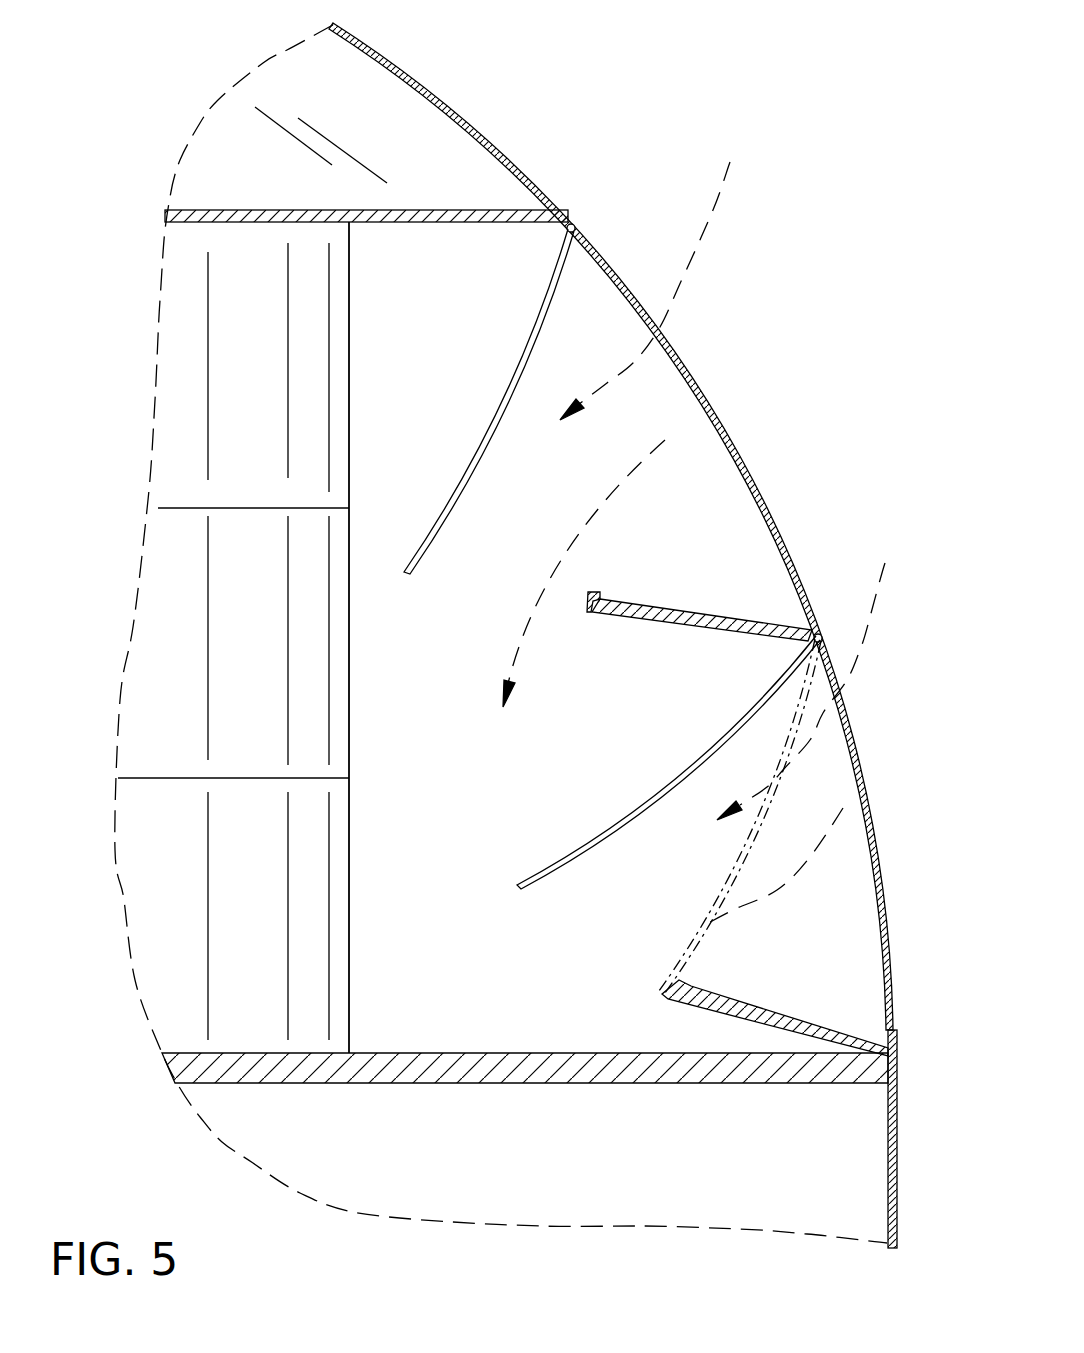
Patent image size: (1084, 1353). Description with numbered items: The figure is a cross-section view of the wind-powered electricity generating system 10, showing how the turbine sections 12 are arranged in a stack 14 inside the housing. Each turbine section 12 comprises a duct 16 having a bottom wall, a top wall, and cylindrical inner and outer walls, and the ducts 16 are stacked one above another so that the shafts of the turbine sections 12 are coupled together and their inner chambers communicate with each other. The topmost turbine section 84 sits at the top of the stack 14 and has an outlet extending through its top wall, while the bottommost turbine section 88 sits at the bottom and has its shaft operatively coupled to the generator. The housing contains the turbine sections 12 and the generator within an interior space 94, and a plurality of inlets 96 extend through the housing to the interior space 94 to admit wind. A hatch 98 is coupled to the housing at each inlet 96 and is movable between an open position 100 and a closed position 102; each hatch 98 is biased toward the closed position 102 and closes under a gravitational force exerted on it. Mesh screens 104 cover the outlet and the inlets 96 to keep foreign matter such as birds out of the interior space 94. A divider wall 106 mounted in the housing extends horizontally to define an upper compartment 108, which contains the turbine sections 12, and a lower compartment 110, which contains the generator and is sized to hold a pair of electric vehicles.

The wind-powered electricity generating system 10 is at (770, 105).
The turbine section 12 is at (207, 370).
The stack 14 is at (95, 380).
The duct 16 is at (245, 258).
The topmost turbine section 84 is at (205, 291).
The bottommost turbine section 88 is at (190, 1012).
The interior space 94 is at (492, 292).
The inlet 96 is at (608, 442).
The hatch 98 is at (460, 470).
The open position 100 is at (425, 583).
The closed position 102 is at (720, 960).
The mesh screen 104 is at (765, 500).
The divider wall 106 is at (791, 1068).
The upper compartment 108 is at (413, 1012).
The lower compartment 110 is at (567, 1180).